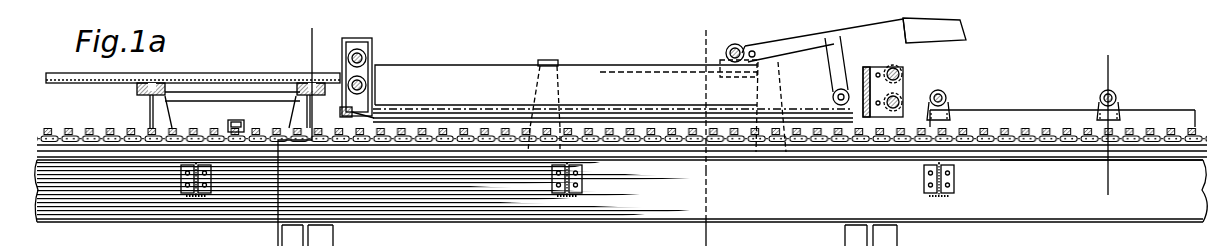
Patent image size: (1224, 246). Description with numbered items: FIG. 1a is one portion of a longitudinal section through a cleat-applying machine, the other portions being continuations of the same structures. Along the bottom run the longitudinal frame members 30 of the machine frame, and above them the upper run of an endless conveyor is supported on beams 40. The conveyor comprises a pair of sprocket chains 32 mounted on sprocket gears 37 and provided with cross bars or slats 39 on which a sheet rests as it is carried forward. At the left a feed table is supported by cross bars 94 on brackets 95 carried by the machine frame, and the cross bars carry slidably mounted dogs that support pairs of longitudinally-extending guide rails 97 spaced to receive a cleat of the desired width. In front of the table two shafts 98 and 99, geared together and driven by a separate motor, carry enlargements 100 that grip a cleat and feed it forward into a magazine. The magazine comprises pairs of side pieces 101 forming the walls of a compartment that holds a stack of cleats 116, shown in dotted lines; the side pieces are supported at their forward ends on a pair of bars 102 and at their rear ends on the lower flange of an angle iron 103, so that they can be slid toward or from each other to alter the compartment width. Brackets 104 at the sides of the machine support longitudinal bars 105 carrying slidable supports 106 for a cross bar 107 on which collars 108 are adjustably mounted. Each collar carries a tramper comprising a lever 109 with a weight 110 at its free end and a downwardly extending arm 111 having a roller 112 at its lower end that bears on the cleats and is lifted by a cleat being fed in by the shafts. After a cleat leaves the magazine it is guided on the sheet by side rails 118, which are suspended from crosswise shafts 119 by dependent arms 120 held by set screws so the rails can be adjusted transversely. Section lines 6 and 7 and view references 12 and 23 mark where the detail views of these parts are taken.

The section line 6- 6 is at (305, 33).
The section line 7- 7 is at (699, 34).
The view reference 12 is at (860, 85).
The view reference 23 is at (1107, 125).
The longitudinal frame members 30 is at (814, 203).
The sprocket chains 32 is at (1036, 144).
The sprocket gears 37 is at (569, 196).
The cross bars 39 is at (1175, 127).
The beams 40 is at (1178, 152).
The cross bars 94 is at (140, 88).
The brackets 95 is at (292, 118).
The guide rails 97 is at (198, 78).
The shaft 98 is at (363, 55).
The shaft 99 is at (366, 88).
The enlargements 100 is at (343, 48).
The side pieces 101 is at (507, 72).
The bars 102 is at (897, 70).
The angle iron 103 is at (345, 118).
The brackets 104 is at (556, 62).
The longitudinal bars 105 is at (640, 71).
The slidable supports 106 is at (728, 60).
The cross bar 107 is at (755, 52).
The collars 108 is at (737, 46).
The levers 109 is at (820, 33).
The weights 110 is at (966, 31).
The downwardly extending arms 111 is at (829, 58).
The roller 112 is at (832, 98).
The cleats 116 is at (455, 108).
The side rails 118 is at (990, 120).
The shafts 119 is at (948, 95).
The dependent arms 120 is at (952, 105).